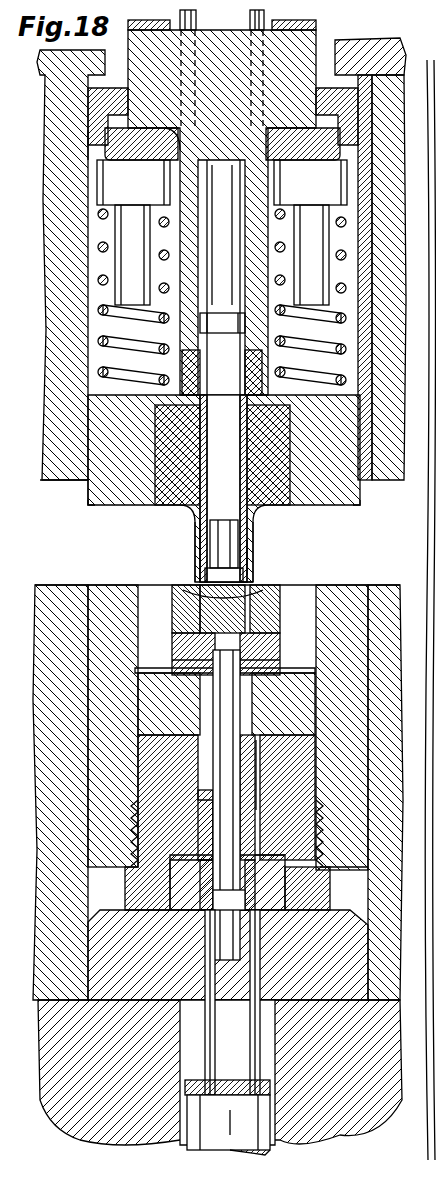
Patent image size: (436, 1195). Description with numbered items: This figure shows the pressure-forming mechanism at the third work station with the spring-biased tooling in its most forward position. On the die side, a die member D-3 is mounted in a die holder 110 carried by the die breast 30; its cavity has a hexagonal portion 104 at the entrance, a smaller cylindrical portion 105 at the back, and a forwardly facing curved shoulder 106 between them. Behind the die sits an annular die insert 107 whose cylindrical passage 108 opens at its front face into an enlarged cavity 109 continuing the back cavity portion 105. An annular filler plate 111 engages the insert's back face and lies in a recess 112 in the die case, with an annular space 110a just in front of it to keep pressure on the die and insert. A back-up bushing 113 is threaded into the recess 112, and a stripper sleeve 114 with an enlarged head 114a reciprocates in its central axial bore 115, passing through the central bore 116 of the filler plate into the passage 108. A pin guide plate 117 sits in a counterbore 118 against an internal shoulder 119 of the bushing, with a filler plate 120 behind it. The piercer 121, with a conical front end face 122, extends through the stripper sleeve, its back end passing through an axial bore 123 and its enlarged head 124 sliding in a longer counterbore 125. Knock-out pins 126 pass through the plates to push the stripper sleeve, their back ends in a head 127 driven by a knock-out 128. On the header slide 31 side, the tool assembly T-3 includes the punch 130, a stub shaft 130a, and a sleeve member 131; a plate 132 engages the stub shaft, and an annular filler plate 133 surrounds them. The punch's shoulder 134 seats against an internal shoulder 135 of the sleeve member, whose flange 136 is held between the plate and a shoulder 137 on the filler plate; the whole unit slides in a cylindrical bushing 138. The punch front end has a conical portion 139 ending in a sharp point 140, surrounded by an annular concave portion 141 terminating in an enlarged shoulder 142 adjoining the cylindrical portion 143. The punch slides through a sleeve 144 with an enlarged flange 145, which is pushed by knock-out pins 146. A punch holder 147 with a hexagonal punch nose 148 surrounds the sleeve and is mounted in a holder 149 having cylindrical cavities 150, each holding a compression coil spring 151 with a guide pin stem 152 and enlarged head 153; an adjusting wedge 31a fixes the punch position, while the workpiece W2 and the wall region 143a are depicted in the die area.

The die breast 30 is at (56, 590).
The header slide 31 is at (52, 60).
The adjusting wedge 31a is at (165, 22).
The hexagonal portion 104 is at (185, 592).
The cylindrical portion 105 is at (278, 606).
The curved shoulder 106 is at (205, 600).
The die insert 107 is at (282, 640).
The cylindrical passage 108 is at (178, 662).
The enlarged cavity 109 is at (180, 640).
The die holder 110 is at (100, 590).
The annular space 110a is at (310, 668).
The filler plate 111 is at (316, 700).
The recess 112 is at (318, 760).
The back-up bushing 113 is at (318, 778).
The stripper sleeve 114 is at (200, 760).
The enlarged head 114a is at (205, 835).
The central axial bore 115 is at (258, 795).
The central bore 116 is at (240, 706).
The pin guide plate 117 is at (278, 920).
The counterbore 118 is at (283, 883).
The internal shoulder 119 is at (265, 856).
The filler plate 120 is at (338, 1000).
The piercer 121 is at (256, 758).
The conical front end face 122 is at (256, 660).
The axial bore 123 is at (205, 880).
The enlarged head 124 is at (225, 912).
The counterbore 125 is at (210, 905).
The knock-out pins 126 is at (205, 1045).
The head 127 is at (272, 1086).
The knock-out 128 is at (250, 1120).
The punch 130 is at (220, 463).
The stub shaft 130a is at (220, 235).
The sleeve member 131 is at (250, 162).
The plate 132 is at (322, 58).
The annular filler plate 133 is at (108, 92).
The enlarged shoulder 134 is at (262, 356).
The internal shoulder 135 is at (204, 318).
The flange 136 is at (172, 132).
The shoulder 137 is at (158, 156).
The cylindrical bushing 138 is at (85, 487).
The conical portion 139 is at (210, 545).
The sharp point 140 is at (200, 570).
The annular concave portion 141 is at (250, 568).
The enlarged shoulder 142 is at (258, 550).
The cylindrical portion 143 is at (206, 528).
The wall 143a is at (88, 140).
The sleeve 144 is at (278, 480).
The enlarged flange 145 is at (170, 438).
The knock-out pins 146 is at (197, 19).
The punch holder 147 is at (178, 510).
The hexagonal punch nose 148 is at (246, 583).
The holder 149 is at (120, 500).
The cylindrical cavities 150 is at (372, 118).
The compression coil spring 151 is at (100, 212).
The stem 152 is at (125, 262).
The enlarged head 153 is at (100, 182).
The die member D-3 is at (183, 590).
The tool assembly T-3 is at (262, 524).
The workpiece W2 is at (223, 617).